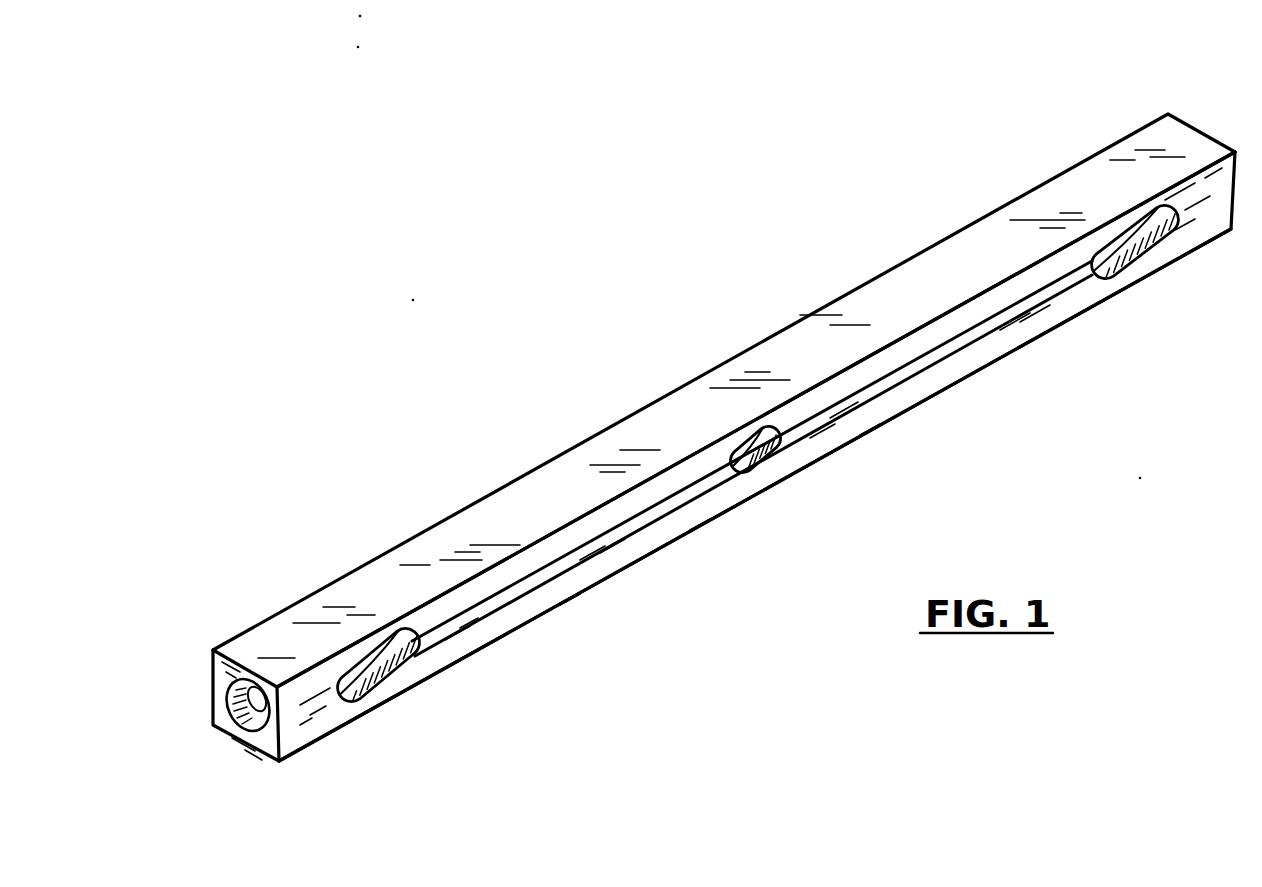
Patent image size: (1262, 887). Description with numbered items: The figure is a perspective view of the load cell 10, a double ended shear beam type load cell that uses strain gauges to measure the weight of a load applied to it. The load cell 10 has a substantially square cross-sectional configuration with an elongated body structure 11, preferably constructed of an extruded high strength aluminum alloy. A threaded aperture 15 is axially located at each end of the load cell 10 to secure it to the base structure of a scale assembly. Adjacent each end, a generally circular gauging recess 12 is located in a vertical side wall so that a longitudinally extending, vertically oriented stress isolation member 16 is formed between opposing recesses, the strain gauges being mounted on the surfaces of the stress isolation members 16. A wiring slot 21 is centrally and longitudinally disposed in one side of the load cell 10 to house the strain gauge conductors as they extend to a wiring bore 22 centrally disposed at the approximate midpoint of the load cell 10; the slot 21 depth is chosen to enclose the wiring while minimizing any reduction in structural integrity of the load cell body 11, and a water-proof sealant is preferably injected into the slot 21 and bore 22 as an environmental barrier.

The load cell 10 is at (500, 318).
The elongated body structure 11 is at (852, 302).
The gauging recess 12 is at (410, 681).
The threaded aperture 15 is at (230, 700).
The stress isolation member 16 is at (357, 668).
The wiring slot 21 is at (548, 572).
The wiring bore 22 is at (763, 477).